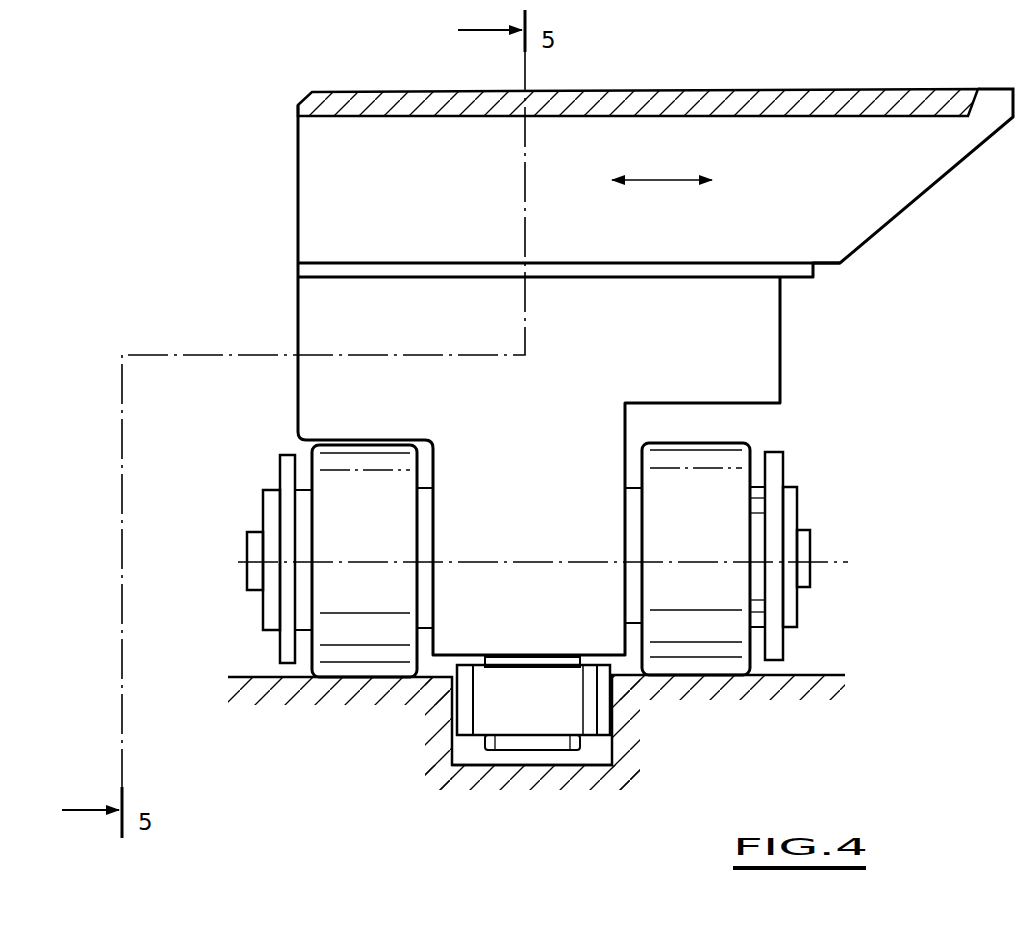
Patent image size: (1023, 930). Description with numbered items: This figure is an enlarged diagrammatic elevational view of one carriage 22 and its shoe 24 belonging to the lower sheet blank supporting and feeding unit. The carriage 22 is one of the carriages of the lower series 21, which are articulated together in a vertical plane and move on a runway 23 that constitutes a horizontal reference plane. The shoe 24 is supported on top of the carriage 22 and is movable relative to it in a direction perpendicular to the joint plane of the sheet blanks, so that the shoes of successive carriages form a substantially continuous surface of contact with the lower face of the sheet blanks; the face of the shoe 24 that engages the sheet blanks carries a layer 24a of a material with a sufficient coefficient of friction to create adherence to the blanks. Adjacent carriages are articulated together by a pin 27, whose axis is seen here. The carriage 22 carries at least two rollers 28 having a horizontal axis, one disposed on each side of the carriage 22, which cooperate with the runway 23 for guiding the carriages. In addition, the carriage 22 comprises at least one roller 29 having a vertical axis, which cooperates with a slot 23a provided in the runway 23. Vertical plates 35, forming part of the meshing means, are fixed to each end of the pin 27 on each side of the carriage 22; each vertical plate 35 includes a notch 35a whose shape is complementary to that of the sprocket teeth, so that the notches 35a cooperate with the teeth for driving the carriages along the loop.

The lower series 21 is at (624, 342).
The carriage 22 is at (315, 303).
The runway 23 is at (268, 693).
The slot 23a is at (470, 750).
The shoe 24 is at (900, 189).
The layer 24a is at (810, 97).
The pin 27 is at (790, 543).
The roller 28 is at (345, 485).
The roller 29 is at (593, 715).
The vertical plate 35 is at (287, 515).
The notch 35a is at (267, 613).